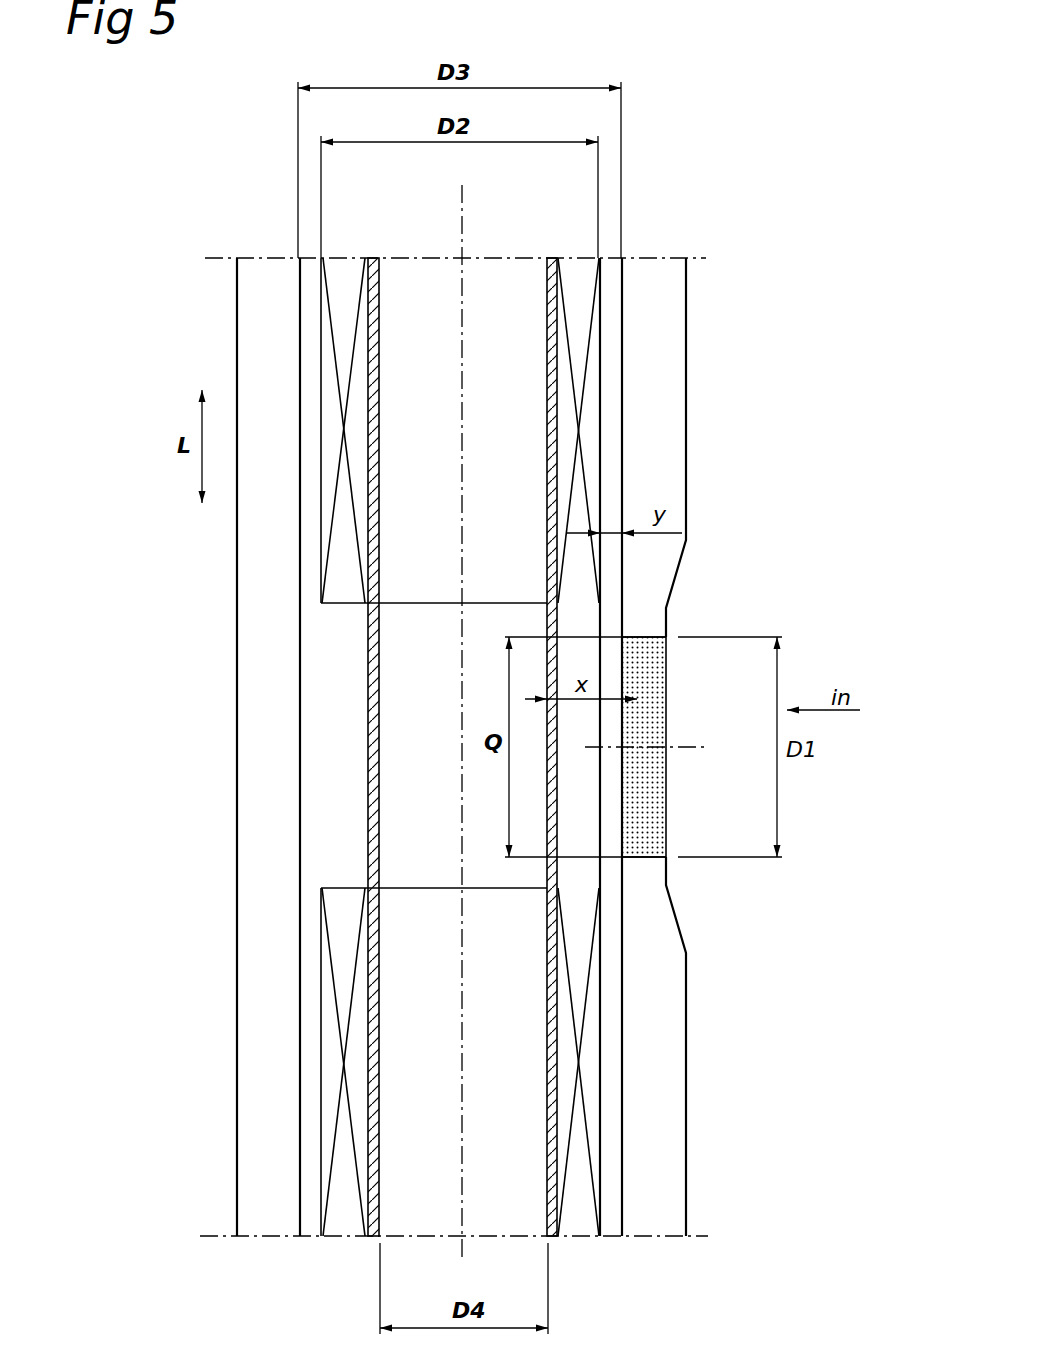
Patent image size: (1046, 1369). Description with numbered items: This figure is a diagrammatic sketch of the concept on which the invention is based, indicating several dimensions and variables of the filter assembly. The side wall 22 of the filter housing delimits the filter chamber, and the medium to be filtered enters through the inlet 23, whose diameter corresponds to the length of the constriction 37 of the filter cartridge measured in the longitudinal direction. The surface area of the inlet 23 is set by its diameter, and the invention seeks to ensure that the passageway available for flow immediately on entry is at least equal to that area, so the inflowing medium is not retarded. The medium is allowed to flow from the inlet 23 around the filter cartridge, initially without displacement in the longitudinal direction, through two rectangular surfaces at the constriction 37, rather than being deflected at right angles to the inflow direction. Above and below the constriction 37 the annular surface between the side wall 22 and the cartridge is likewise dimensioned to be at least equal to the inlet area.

The side wall 22 is at (665, 320).
The inlet 23 is at (645, 810).
The constriction 37 is at (355, 724).